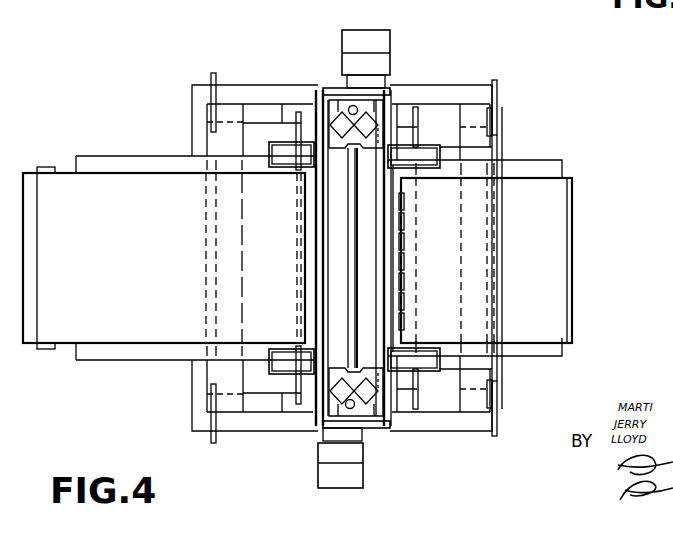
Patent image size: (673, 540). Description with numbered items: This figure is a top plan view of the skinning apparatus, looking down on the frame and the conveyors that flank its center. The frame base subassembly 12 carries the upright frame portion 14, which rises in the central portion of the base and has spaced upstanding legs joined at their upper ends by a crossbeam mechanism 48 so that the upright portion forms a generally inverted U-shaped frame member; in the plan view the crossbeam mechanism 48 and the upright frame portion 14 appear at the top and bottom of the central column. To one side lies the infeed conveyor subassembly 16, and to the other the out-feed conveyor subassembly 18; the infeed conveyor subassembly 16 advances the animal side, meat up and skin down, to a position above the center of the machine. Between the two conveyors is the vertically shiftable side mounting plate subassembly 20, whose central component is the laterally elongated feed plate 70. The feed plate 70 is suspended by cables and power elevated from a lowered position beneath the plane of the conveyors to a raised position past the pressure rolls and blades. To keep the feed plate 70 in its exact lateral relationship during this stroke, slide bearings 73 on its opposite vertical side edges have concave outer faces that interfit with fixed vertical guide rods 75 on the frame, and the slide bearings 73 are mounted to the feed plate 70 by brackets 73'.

The frame base subassembly 12 is at (468, 90).
The upright frame portion 14 is at (333, 473).
The infeed conveyor subassembly 16 is at (95, 215).
The out-feed conveyor subassembly 18 is at (532, 218).
The side mounting plate subassembly 20 is at (357, 177).
The crossbeam mechanism 48 is at (372, 40).
The feed plate 70 is at (350, 217).
The slide bearings 73 is at (397, 263).
The brackets 73' is at (296, 261).
The vertical guide rods 75 is at (351, 107).